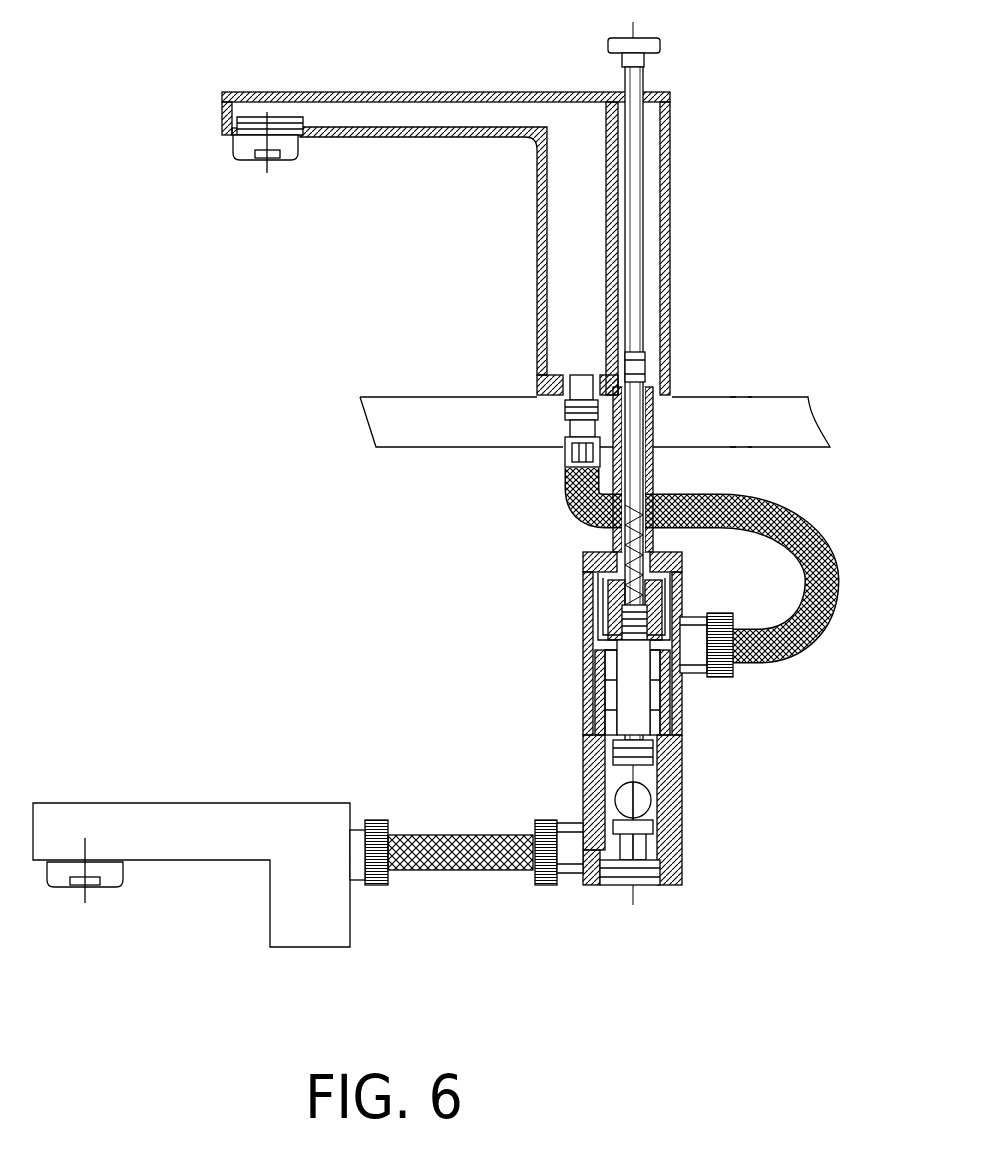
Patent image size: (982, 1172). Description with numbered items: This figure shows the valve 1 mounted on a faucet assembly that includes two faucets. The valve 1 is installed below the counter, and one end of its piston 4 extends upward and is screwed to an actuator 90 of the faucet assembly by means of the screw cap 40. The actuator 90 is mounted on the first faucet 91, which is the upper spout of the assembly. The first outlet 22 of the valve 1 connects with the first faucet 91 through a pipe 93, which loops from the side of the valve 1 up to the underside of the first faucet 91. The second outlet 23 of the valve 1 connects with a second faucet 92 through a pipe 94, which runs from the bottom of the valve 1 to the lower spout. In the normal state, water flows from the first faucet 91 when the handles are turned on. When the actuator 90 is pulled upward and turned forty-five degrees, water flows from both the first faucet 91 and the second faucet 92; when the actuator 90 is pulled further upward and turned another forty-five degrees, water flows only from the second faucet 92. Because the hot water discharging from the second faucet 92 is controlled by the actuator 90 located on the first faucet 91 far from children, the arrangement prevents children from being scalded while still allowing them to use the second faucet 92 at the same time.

The valve 1 is at (572, 654).
The piston 4 is at (655, 468).
The first outlet 22 is at (693, 662).
The second outlet 23 is at (572, 860).
The screw cap 40 is at (645, 374).
The actuator 90 is at (638, 143).
The first faucet 91 is at (395, 118).
The second faucet 92 is at (183, 846).
The pipe 93 is at (837, 634).
The pipe 94 is at (450, 835).